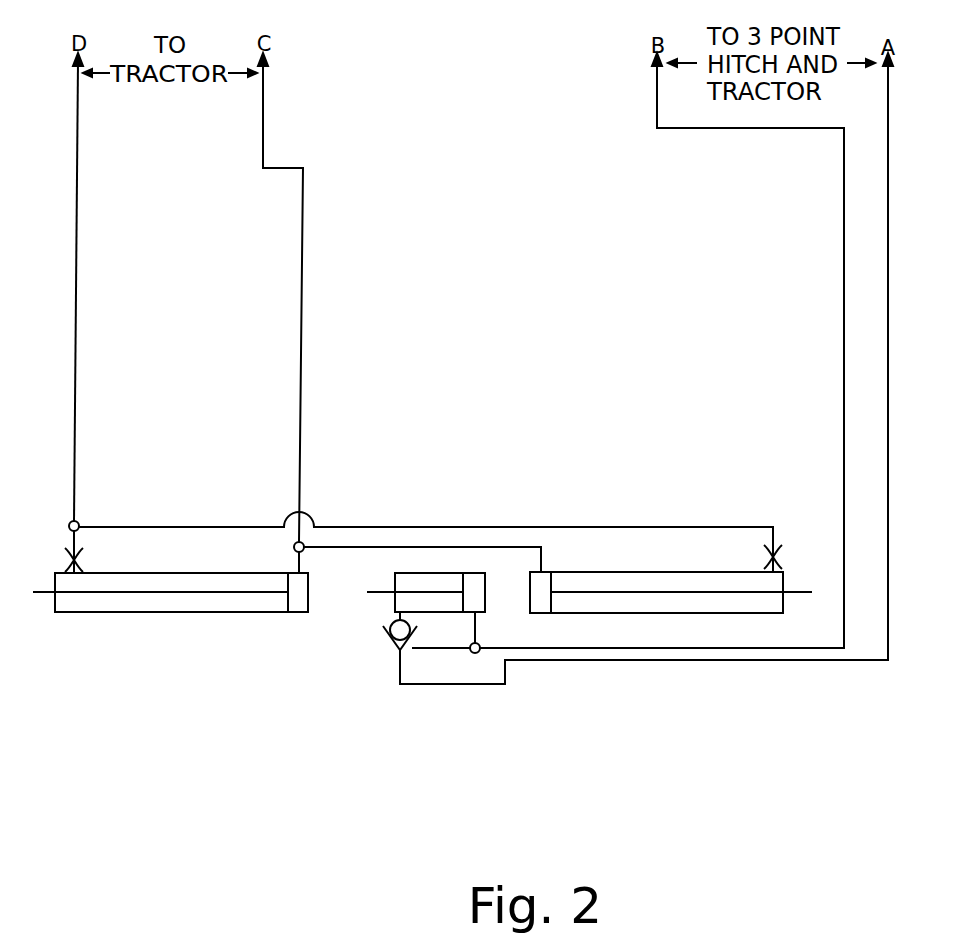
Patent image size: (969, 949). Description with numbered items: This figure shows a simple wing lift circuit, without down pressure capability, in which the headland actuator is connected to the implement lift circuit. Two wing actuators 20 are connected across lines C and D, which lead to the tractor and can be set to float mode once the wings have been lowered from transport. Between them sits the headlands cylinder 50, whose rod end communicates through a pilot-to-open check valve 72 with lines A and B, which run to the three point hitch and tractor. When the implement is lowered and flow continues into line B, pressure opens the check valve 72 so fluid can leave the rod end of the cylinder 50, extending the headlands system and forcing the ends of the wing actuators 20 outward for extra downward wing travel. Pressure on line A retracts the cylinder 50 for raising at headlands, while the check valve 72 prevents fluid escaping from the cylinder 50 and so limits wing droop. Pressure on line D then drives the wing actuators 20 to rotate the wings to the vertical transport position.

The wing actuators 20 is at (78, 613).
The headlands cylinder 50 is at (395, 600).
The pilot-to-open check valve 72 is at (390, 637).